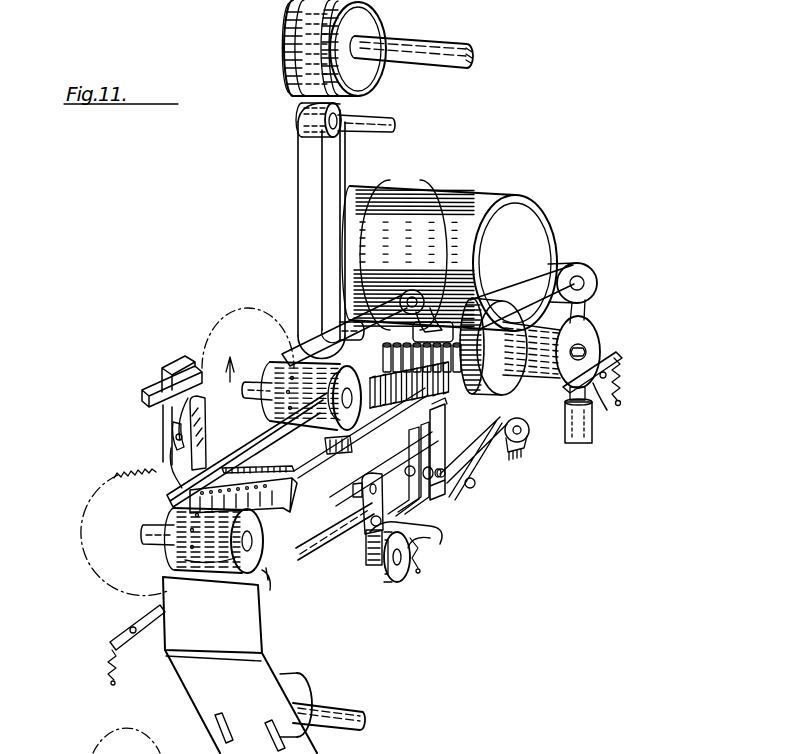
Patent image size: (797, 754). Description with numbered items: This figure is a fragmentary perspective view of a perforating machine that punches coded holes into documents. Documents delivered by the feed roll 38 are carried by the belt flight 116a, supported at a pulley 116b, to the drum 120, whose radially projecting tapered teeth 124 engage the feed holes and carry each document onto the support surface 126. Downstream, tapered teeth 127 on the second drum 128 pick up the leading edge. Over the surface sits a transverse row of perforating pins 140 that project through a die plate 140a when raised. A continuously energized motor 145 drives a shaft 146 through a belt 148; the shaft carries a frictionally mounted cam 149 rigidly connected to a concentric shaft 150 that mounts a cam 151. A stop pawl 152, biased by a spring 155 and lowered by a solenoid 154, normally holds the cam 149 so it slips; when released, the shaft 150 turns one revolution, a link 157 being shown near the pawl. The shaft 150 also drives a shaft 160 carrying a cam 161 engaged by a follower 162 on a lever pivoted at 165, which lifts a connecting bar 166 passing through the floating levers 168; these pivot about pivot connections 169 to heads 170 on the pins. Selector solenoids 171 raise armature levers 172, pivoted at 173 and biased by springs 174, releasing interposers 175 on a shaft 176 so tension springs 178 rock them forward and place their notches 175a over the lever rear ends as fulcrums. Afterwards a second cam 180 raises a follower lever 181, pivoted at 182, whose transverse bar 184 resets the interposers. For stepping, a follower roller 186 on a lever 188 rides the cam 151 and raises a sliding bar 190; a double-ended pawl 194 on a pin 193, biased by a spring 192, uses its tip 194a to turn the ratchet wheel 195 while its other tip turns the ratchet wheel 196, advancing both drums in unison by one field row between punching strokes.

The feed roll 38 is at (290, 33).
The belt flight 116a is at (326, 166).
The belt pulley 116b is at (326, 126).
The drum 120 is at (270, 372).
The tapered teeth 124 is at (311, 396).
The support surface 126 is at (330, 447).
The tapered teeth 127 is at (198, 549).
The second drum 128 is at (176, 548).
The perforating pins 140 is at (213, 539).
The die plate 140a is at (234, 485).
The motor 145 is at (535, 222).
The shaft 146 is at (519, 378).
The belt 148 is at (556, 258).
The cam 149 is at (582, 336).
The shaft 150 is at (590, 350).
The cam 151 is at (424, 312).
The stop pawl 152 is at (600, 400).
The solenoid 154 is at (593, 440).
The spring 155 is at (622, 384).
The link 157 is at (600, 396).
The shaft 160 is at (337, 555).
The cam 161 is at (374, 568).
The follower 162 is at (367, 524).
The pivot 165 is at (526, 445).
The connecting bar 166 is at (405, 471).
The floating levers 168 is at (328, 445).
The pivot connections 169 is at (268, 590).
The heads 170 is at (446, 338).
The selector solenoids 171 is at (347, 330).
The armature levers 172 is at (396, 379).
The pivot 173 is at (500, 366).
The springs 174 is at (482, 336).
The interposers 175 is at (446, 430).
The notches 175a is at (446, 404).
The shaft 176 is at (448, 497).
The tension springs 178 is at (420, 560).
The second cam 180 is at (400, 583).
The follower lever 181 is at (436, 536).
The pivot 182 is at (476, 488).
The transverse bar 184 is at (438, 530).
The follower roller 186 is at (403, 293).
The lever 188 is at (236, 455).
The sliding bar 190 is at (172, 357).
The spring 192 is at (172, 436).
The pin 193 is at (176, 477).
The double-ended pawl 194 is at (207, 420).
The pawl tip 194a is at (206, 403).
The ratchet wheel 195 is at (256, 320).
The ratchet wheel 196 is at (120, 487).